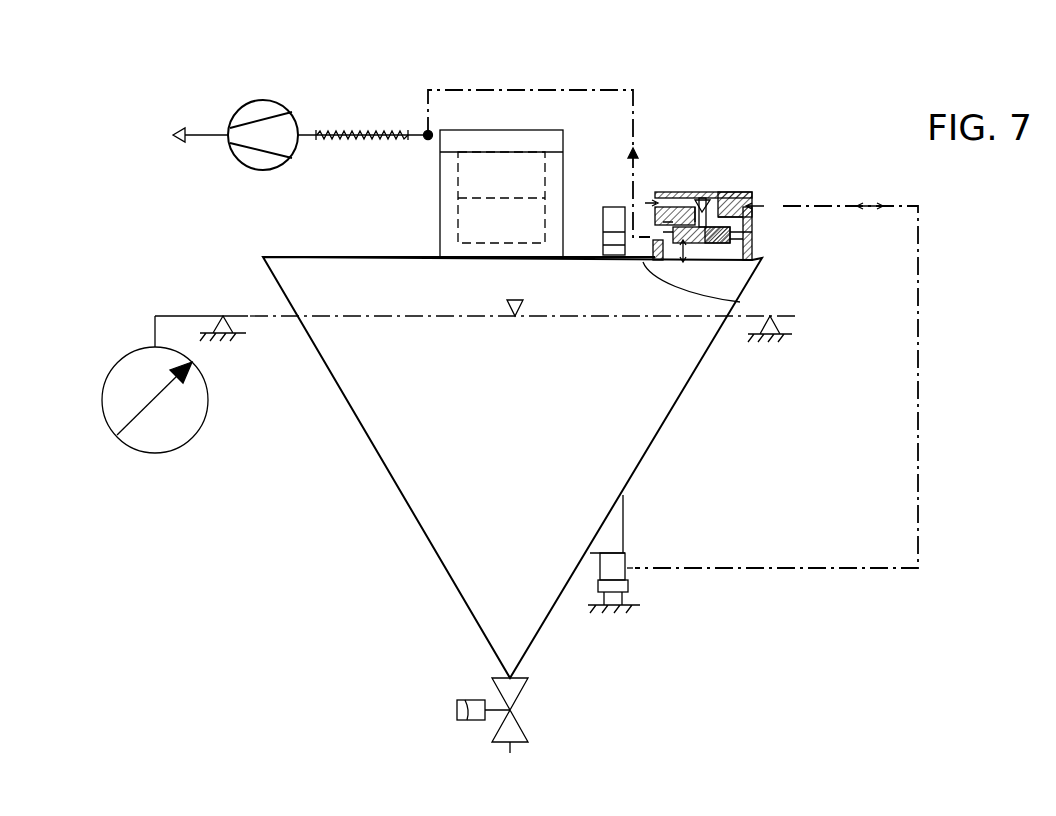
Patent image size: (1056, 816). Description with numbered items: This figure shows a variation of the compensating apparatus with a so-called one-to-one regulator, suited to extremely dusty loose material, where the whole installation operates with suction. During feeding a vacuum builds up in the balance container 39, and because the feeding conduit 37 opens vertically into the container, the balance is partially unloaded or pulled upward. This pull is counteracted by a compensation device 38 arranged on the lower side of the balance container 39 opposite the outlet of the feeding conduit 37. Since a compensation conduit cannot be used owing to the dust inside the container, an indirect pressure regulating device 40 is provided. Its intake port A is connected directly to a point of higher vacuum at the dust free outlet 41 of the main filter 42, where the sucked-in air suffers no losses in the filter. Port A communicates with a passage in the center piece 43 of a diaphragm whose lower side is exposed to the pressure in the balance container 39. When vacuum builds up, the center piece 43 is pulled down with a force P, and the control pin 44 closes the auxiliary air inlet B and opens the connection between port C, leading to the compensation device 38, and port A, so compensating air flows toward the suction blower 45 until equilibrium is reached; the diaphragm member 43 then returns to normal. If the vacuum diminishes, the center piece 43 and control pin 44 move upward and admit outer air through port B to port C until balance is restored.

The feeding conduit 37 is at (612, 218).
The compensation device 38 is at (630, 592).
The balance container 39 is at (668, 392).
The indirect pressure regulating device 40 is at (743, 191).
The dust free outlet 41 is at (426, 142).
The main filter 42 is at (458, 218).
The center piece of diaphragm 43 is at (723, 247).
The control pin 44 is at (713, 203).
The suction blower 45 is at (262, 113).